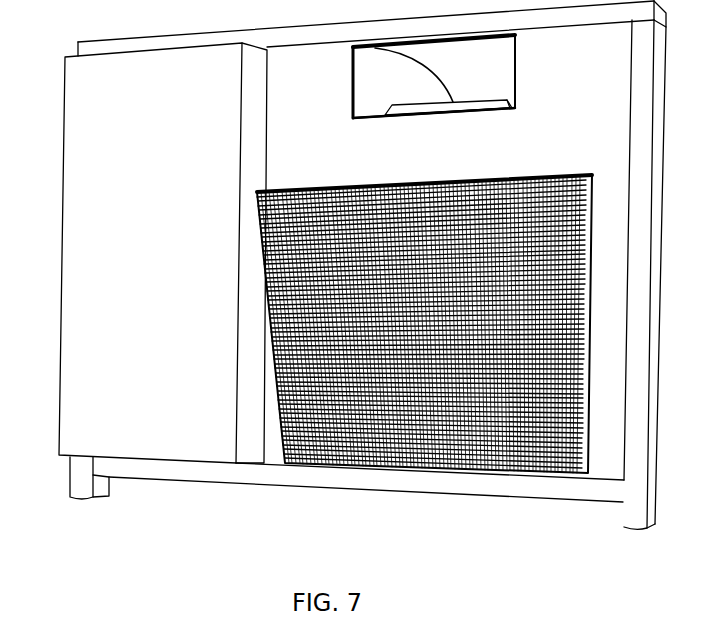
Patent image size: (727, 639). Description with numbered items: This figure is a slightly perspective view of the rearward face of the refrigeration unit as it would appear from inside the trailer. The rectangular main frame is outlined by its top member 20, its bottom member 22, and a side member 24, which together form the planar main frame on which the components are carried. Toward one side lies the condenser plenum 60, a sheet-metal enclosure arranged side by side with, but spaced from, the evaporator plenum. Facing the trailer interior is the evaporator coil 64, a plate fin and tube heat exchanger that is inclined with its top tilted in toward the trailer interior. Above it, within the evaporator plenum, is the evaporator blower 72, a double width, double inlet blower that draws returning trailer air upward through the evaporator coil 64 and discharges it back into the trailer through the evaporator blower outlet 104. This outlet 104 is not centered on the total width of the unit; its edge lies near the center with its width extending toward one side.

The top member 20 is at (322, 32).
The bottom member 22 is at (262, 477).
The side member 24 is at (640, 128).
The condenser plenum 60 is at (68, 226).
The evaporator coil 64 is at (290, 342).
The evaporator blower 72 is at (421, 109).
The evaporator blower outlet 104 is at (488, 69).